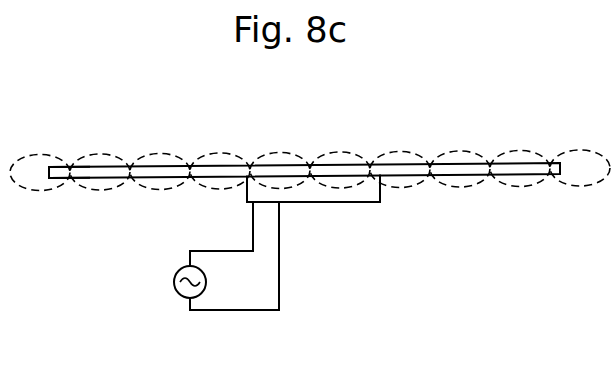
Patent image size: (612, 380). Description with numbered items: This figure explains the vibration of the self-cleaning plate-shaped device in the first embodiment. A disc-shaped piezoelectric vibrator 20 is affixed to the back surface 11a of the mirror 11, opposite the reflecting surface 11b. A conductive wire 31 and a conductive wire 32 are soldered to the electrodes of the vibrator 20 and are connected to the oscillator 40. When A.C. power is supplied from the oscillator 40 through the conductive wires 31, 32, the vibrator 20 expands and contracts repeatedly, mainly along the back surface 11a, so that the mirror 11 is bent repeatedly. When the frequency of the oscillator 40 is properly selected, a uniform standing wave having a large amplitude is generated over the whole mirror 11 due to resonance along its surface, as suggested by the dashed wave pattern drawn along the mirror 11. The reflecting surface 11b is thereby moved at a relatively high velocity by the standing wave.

The mirror 11 is at (520, 166).
The back surface of the mirror 11a is at (70, 172).
The reflecting surface 11b is at (70, 172).
The piezoelectric vibrator 20 is at (365, 203).
The conductive wire 31 is at (213, 250).
The conductive wire 32 is at (283, 288).
The oscillator 40 is at (173, 288).